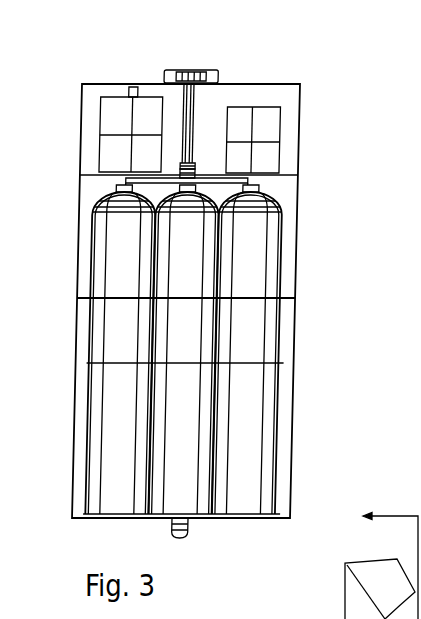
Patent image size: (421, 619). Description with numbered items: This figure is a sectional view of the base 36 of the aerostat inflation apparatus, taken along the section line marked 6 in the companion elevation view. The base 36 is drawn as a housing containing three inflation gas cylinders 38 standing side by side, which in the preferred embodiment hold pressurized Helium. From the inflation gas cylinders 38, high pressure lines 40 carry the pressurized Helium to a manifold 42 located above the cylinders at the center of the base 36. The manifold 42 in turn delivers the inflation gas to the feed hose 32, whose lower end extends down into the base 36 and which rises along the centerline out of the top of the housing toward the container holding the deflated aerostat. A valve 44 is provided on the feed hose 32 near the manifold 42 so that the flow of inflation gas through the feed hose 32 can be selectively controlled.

The viewing direction arrow 6 is at (381, 548).
The feed hose 32 is at (197, 115).
The base 36 is at (292, 427).
The inflation gas cylinders 38 is at (282, 382).
The high pressure lines 40 is at (234, 177).
The manifold 42 is at (182, 173).
The valve 44 is at (185, 163).